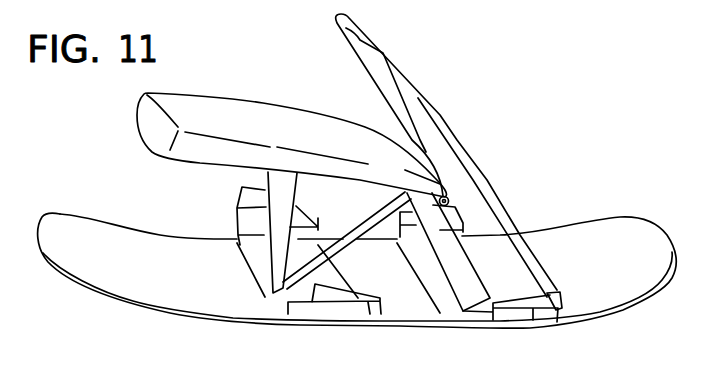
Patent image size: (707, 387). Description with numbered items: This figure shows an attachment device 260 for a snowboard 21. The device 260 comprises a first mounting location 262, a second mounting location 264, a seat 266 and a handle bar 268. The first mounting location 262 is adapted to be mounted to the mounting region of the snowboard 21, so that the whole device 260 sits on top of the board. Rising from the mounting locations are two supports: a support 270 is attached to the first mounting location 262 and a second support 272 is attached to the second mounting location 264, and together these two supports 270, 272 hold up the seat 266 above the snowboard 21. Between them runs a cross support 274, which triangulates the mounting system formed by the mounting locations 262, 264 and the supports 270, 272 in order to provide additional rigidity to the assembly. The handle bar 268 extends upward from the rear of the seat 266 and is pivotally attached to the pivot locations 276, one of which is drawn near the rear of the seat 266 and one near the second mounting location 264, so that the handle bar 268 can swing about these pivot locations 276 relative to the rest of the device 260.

The snowboard 21 is at (590, 236).
The device 260 is at (121, 116).
The first mounting location 262 is at (308, 306).
The second mounting location 264 is at (496, 312).
The seat 266 is at (259, 112).
The handle bar 268 is at (434, 115).
The support 270 is at (263, 252).
The second support 272 is at (455, 263).
The cross support 274 is at (330, 250).
The pivot locations 276 is at (450, 200).